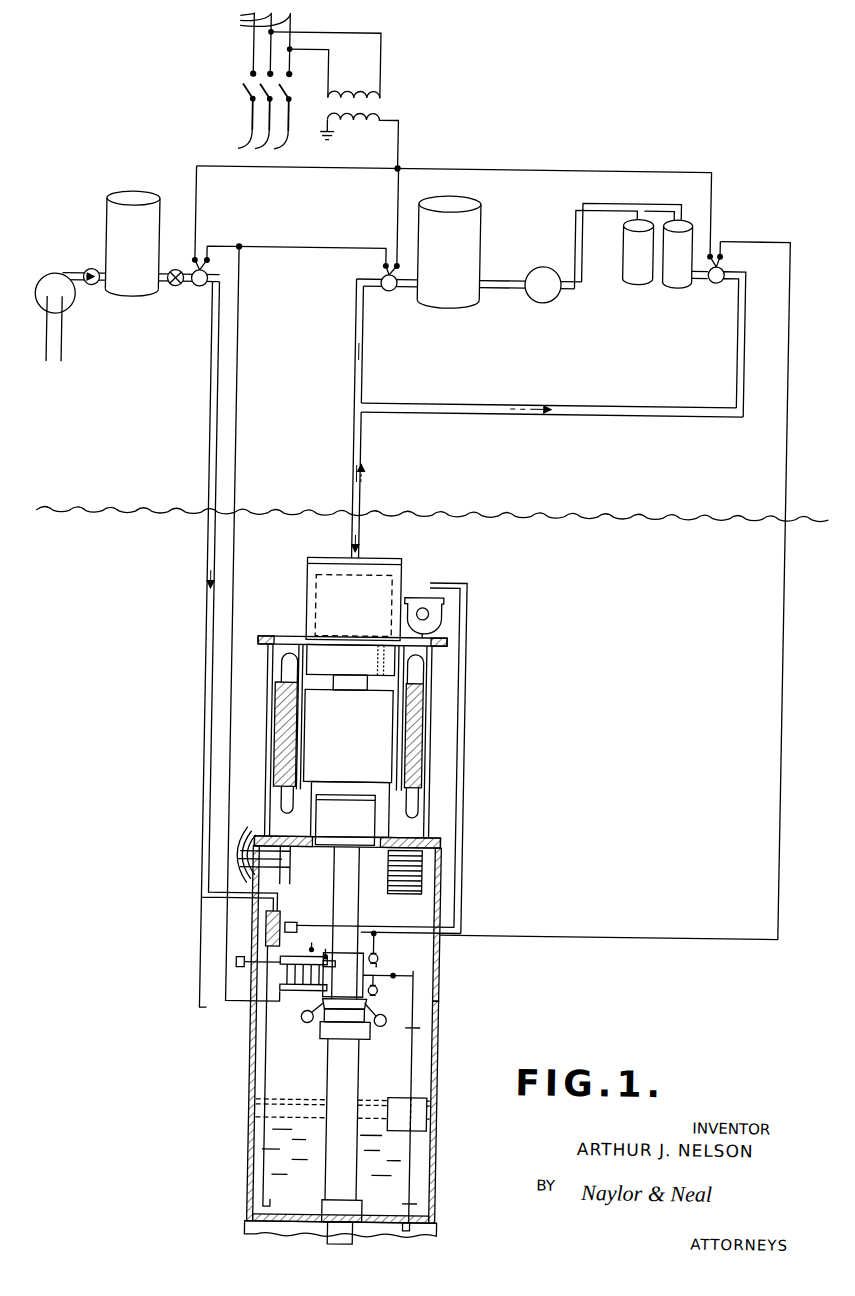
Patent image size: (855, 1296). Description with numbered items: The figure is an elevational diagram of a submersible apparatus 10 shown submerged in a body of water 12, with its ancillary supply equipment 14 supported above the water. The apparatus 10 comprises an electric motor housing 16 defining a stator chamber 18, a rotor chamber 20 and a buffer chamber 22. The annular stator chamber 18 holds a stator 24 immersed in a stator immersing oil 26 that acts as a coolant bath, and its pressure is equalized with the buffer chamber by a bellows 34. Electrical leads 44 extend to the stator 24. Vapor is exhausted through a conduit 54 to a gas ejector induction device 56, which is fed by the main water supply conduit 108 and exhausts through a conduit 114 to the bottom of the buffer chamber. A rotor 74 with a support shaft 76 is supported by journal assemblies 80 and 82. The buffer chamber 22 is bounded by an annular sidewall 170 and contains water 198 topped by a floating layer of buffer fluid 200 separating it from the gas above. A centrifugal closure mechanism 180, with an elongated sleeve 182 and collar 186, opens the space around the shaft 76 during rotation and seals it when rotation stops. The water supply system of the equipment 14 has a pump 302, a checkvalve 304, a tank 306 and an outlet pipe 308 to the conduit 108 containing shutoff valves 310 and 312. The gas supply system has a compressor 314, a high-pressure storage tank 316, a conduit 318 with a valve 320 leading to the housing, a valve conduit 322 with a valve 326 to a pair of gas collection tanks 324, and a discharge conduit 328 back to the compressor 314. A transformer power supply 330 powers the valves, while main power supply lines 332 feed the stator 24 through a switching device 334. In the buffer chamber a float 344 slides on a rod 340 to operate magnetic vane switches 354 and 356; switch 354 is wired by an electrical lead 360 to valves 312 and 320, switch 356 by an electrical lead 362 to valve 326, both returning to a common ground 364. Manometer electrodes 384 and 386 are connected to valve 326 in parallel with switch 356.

The apparatus 10 is at (333, 550).
The body of water 12 is at (432, 561).
The ancillary supply equipment 14 is at (424, 150).
The electric motor housing 16 is at (436, 794).
The stator chamber 18 is at (419, 832).
The rotor chamber 20 is at (310, 643).
The buffer chamber 22 is at (438, 1021).
The stator 24 is at (285, 726).
The stator immersing oil 26 is at (434, 617).
The bellows 34 is at (410, 882).
The electrical leads 44 is at (257, 507).
The conduit 54 is at (467, 735).
The gas ejector induction device 56 is at (276, 919).
The rotor 74 is at (349, 735).
The support shaft 76 is at (341, 894).
The journal assembly 80 is at (330, 845).
The journal assembly 82 is at (382, 665).
The main water supply conduit 108 is at (209, 531).
The conduit 114 is at (276, 1153).
The annular sidewall 170 is at (445, 978).
The centrifugal closure mechanism 180 is at (388, 1030).
The elongated sleeve 182 is at (342, 1071).
The collar 186 is at (332, 1202).
The water 198 is at (265, 1128).
The buffer fluid 200 is at (265, 1104).
The pump 302 is at (35, 281).
The checkvalve 304 is at (84, 290).
The tank 306 is at (134, 197).
The outlet pipe 308 is at (183, 263).
The manually operable shutoff valve 310 is at (167, 289).
The electrically operable shutoff valve 312 is at (191, 289).
The compressor 314 is at (535, 301).
The high-pressure storage tank 316 is at (471, 226).
The conduit 318 is at (349, 380).
The electrically operable shutoff valve 320 is at (374, 277).
The valve conduit 322 is at (658, 412).
The gas collection tanks 324 is at (663, 289).
The electrically operable shutoff valve 326 is at (711, 283).
The discharge conduit 328 is at (578, 201).
The transformer power supply 330 is at (380, 77).
The main power supply lines 332 is at (240, 43).
The switching device 334 is at (231, 79).
The rod 340 is at (420, 1067).
The float 344 is at (438, 1118).
The magnetic vane operated switch 354 is at (381, 992).
The magnetic vane operated switch 356 is at (383, 959).
The electrical lead 360 is at (233, 441).
The electrical lead 362 is at (778, 585).
The ground 364 is at (349, 964).
The electrode 384 is at (323, 986).
The electrode 386 is at (303, 940).